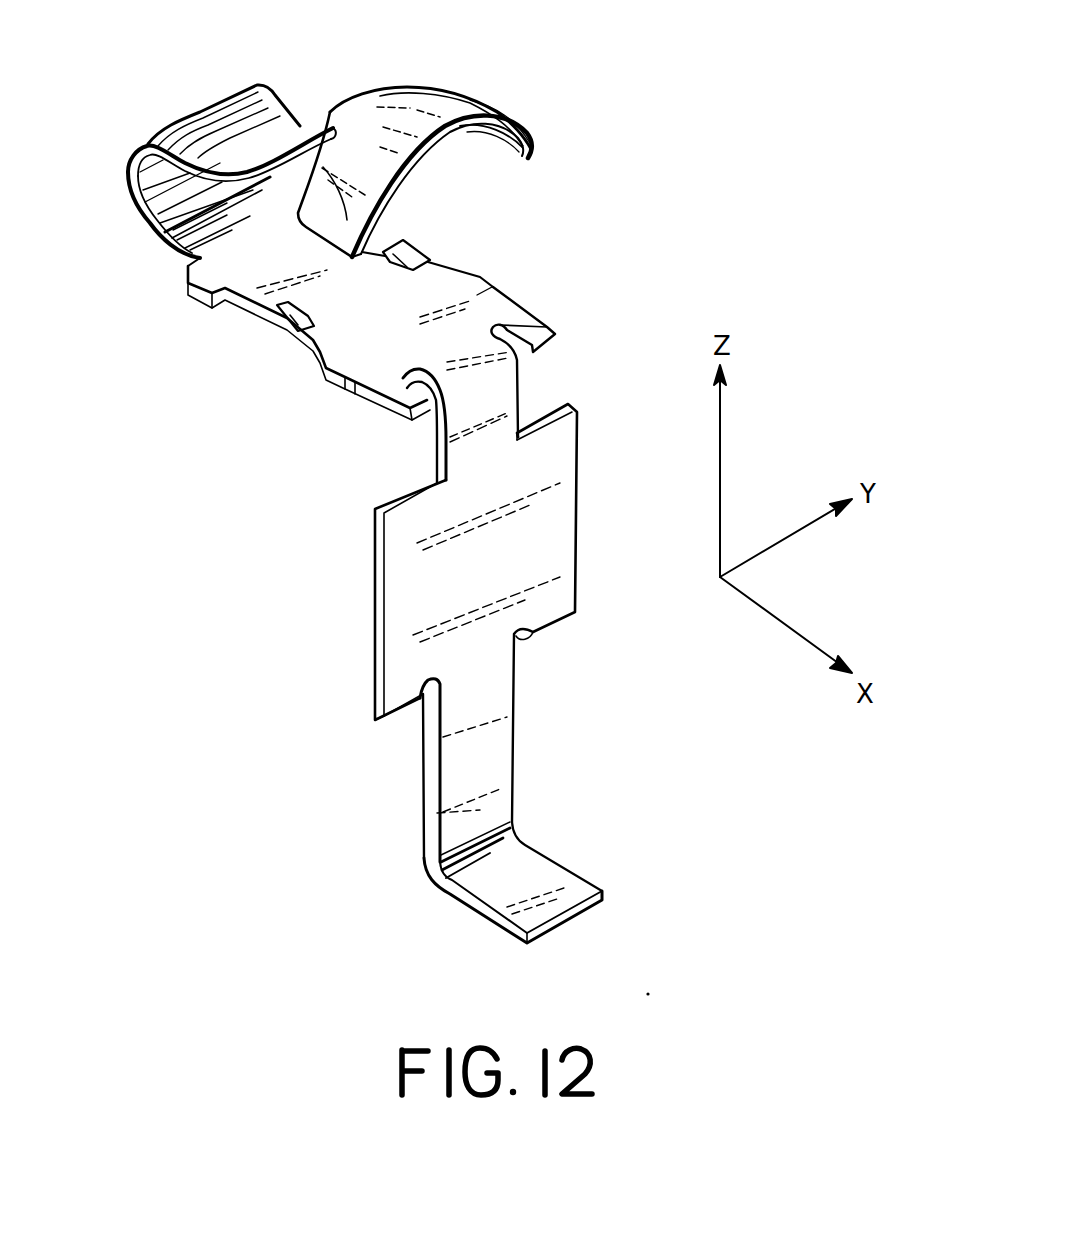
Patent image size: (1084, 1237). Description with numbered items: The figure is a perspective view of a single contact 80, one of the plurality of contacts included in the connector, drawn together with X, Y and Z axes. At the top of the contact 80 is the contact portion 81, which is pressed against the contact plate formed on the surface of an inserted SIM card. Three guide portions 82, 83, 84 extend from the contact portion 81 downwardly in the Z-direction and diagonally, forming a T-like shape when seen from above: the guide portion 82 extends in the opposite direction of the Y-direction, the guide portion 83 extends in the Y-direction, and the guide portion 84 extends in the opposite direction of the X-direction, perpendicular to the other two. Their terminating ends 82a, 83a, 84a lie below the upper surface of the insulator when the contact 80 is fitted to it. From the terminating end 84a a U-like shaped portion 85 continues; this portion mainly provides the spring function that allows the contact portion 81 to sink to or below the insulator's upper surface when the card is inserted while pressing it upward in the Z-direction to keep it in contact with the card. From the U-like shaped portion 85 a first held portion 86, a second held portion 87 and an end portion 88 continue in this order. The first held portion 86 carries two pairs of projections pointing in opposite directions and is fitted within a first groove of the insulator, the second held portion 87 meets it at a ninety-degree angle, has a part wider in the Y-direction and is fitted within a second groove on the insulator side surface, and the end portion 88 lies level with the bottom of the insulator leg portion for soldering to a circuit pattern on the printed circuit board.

The contact 80 is at (543, 218).
The contact portion 81 is at (403, 102).
The guide portion 82 is at (337, 213).
The terminating end 82a is at (304, 230).
The guide portion 83 is at (517, 125).
The terminating end 83a is at (528, 157).
The guide portion 84 is at (330, 112).
The terminating end 84a is at (257, 157).
The U-like shaped portion 85 is at (130, 205).
The first held portion 86 is at (485, 283).
The second held portion 87 is at (548, 552).
The end portion 88 is at (528, 866).